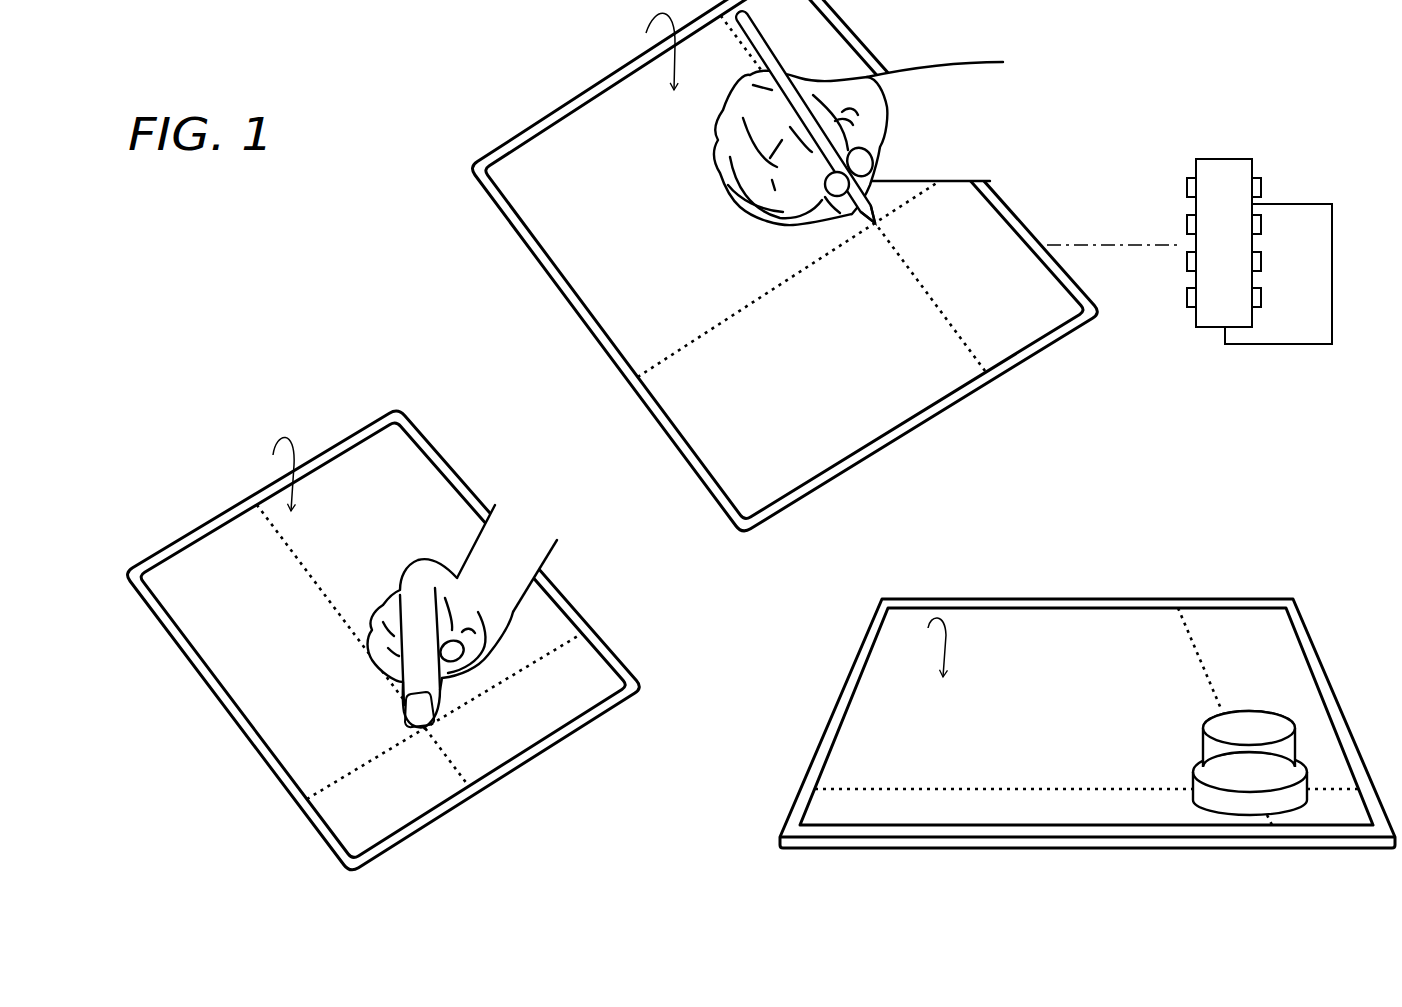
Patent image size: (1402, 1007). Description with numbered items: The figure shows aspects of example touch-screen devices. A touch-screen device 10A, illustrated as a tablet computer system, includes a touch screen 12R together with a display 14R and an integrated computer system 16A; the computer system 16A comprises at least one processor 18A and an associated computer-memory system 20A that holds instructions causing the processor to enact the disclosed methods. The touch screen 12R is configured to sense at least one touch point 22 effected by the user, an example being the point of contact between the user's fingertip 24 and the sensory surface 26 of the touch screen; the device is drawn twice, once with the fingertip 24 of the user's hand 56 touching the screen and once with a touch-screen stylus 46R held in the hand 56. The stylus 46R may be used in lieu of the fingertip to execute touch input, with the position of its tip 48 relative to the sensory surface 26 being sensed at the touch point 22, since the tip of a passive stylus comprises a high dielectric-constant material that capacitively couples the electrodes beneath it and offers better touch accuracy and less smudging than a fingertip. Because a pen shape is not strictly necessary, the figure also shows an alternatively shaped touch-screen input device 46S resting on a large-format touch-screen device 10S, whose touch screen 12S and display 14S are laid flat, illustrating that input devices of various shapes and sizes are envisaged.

The touch-screen device 10A is at (585, 441).
The touch screen 12R is at (557, 192).
The display 14R is at (766, 503).
The touch point 22 is at (876, 227).
The fingertip 24 is at (403, 719).
The sensory surface 26 is at (460, 262).
The touch-screen stylus 46R is at (762, 34).
The tip 48 is at (883, 212).
The hand 56 is at (831, 118).
The computer system 16A is at (1189, 273).
The processor 18A is at (1278, 274).
The computer-memory system 20A is at (1206, 254).
The large-format touch-screen device 10S is at (1082, 703).
The square display 12S is at (1048, 708).
The square housing 14S is at (1193, 608).
The touch-screen input device 46S is at (1232, 740).